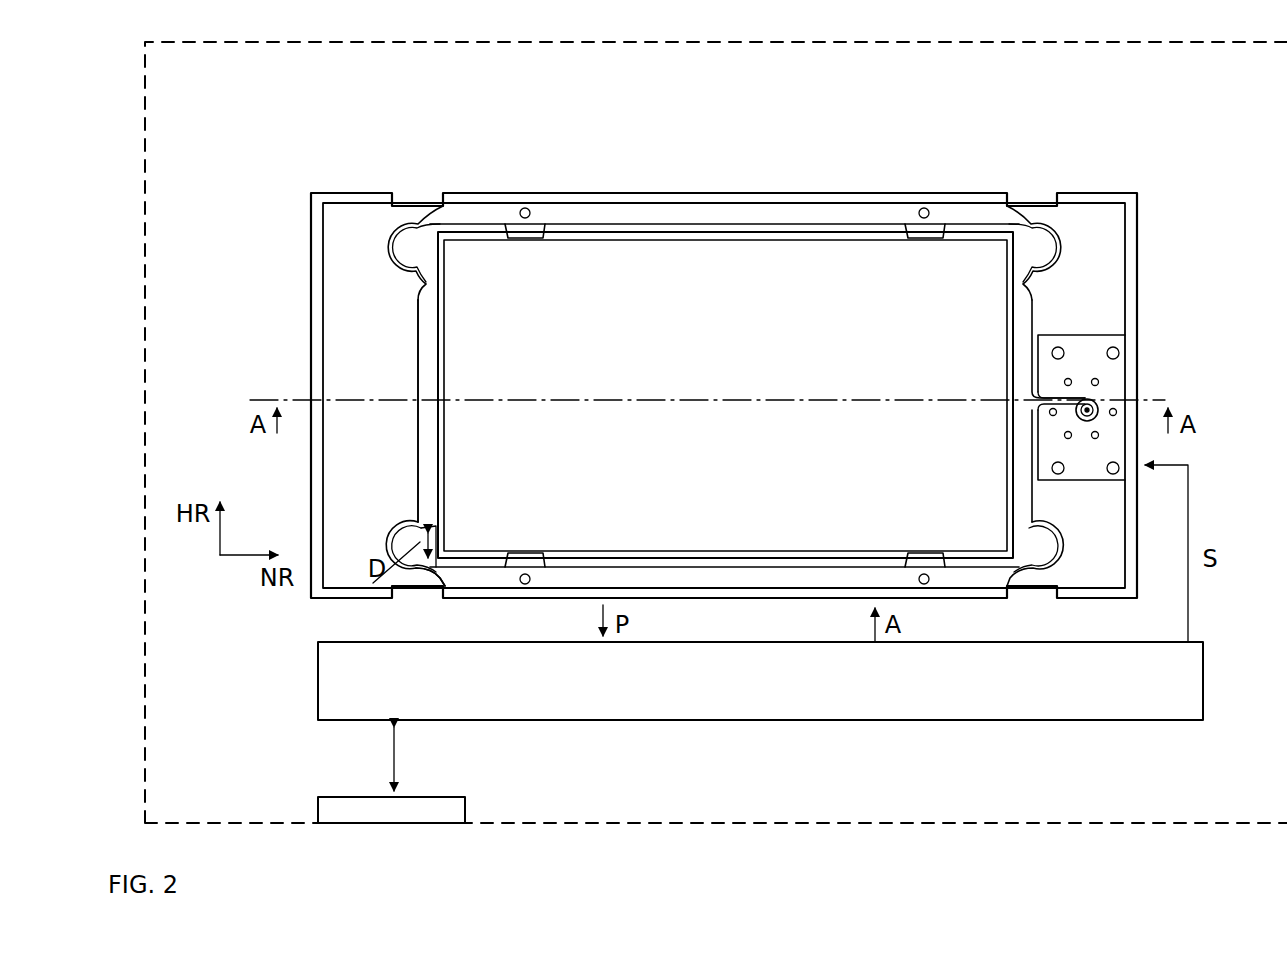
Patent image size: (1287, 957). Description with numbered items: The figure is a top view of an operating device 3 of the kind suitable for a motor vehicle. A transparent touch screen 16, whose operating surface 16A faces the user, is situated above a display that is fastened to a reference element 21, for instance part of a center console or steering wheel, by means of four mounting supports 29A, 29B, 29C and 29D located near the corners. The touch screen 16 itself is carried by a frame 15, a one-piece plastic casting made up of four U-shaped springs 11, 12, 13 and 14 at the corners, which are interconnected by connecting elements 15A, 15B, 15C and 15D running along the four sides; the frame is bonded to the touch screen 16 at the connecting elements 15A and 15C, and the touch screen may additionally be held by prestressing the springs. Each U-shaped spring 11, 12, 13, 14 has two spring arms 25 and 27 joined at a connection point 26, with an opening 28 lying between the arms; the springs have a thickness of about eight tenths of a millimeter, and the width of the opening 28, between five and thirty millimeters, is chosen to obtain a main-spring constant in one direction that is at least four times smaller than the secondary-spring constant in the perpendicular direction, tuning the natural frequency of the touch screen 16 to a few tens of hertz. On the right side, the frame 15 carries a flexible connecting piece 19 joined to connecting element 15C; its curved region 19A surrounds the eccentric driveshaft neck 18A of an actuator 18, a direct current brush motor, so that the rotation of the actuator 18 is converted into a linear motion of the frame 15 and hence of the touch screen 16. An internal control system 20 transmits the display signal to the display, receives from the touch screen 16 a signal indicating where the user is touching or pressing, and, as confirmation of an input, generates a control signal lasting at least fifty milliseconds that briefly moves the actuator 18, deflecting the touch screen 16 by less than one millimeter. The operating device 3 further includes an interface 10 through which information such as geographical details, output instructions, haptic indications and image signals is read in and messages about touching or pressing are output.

The operating device 3 is at (145, 247).
The interface 10 is at (452, 808).
The U-shaped spring 11 is at (1053, 242).
The U-shaped spring 12 is at (400, 236).
The U-shaped spring 13 is at (400, 527).
The U-shaped spring 14 is at (1053, 545).
The frame 15 is at (428, 383).
The connecting element 15A is at (428, 330).
The connecting element 15B is at (737, 215).
The connecting element 15C is at (1030, 322).
The connecting element 15D is at (747, 578).
The touch screen 16 is at (605, 272).
The operating surface 16A is at (823, 272).
The actuator 18 is at (1097, 347).
The eccentric driveshaft neck 18A is at (1098, 417).
The connecting piece 19 is at (1058, 395).
The curved region 19A is at (1093, 406).
The internal control system 20 is at (760, 681).
The reference element 21 is at (338, 582).
The spring arm 25 is at (398, 542).
The connection point 26 is at (407, 548).
The spring arm 27 is at (407, 567).
The opening 28 is at (428, 550).
The mounting support 29A is at (527, 233).
The mounting support 29B is at (925, 233).
The mounting support 29C is at (925, 560).
The mounting support 29D is at (525, 560).